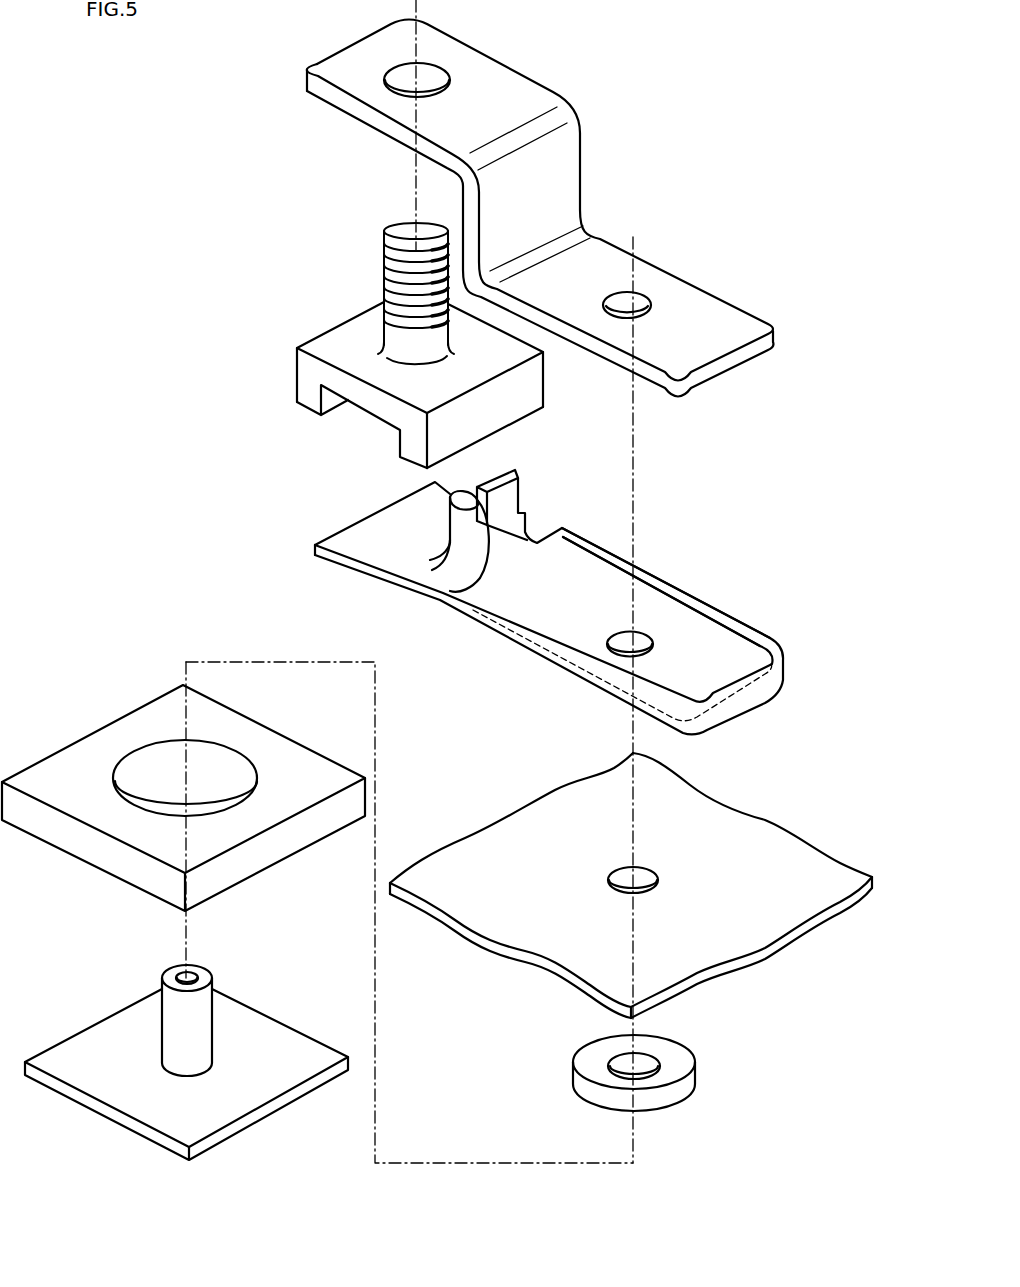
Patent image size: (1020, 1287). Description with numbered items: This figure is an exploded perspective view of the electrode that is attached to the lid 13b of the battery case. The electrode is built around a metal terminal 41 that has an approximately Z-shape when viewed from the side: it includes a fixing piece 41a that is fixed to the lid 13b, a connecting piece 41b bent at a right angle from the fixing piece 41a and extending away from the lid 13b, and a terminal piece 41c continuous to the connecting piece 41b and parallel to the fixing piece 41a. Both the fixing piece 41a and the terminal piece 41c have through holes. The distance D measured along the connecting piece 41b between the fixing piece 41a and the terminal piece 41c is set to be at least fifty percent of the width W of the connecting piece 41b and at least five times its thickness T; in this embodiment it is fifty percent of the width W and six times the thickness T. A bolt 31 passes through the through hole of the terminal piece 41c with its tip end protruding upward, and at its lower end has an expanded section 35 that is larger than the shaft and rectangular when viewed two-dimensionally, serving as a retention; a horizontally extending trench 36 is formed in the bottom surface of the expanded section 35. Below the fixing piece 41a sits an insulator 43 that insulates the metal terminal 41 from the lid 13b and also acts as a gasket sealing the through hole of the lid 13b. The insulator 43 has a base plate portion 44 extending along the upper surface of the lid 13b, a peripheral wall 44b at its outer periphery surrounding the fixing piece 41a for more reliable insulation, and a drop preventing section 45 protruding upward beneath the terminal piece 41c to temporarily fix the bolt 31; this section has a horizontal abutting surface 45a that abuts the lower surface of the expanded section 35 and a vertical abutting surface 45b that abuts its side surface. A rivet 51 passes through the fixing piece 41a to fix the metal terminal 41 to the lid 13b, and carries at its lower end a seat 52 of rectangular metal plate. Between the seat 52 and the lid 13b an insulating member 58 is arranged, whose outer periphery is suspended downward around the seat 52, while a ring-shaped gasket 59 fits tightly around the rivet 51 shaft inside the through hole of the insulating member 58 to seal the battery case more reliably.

The lid 13b is at (723, 917).
The bolt 31 is at (373, 247).
The expanded section 35 is at (395, 385).
The trench 36 is at (355, 417).
The metal terminal 41 is at (540, 201).
The fixing piece 41a is at (693, 297).
The connecting piece 41b is at (560, 160).
The terminal piece 41c is at (453, 58).
The insulator 43 is at (556, 591).
The base plate portion 44 is at (392, 592).
The peripheral wall 44b is at (690, 598).
The drop preventing section 45 is at (447, 520).
The horizontal abutting surface 45a is at (465, 510).
The vertical abutting surface 45b is at (503, 474).
The rivet 51 is at (173, 1007).
The seat 52 is at (253, 1078).
The insulating member 58 is at (68, 767).
The gasket 59 is at (680, 1093).
The thickness T is at (488, 212).
The width W is at (583, 163).
The distance D is at (774, 334).